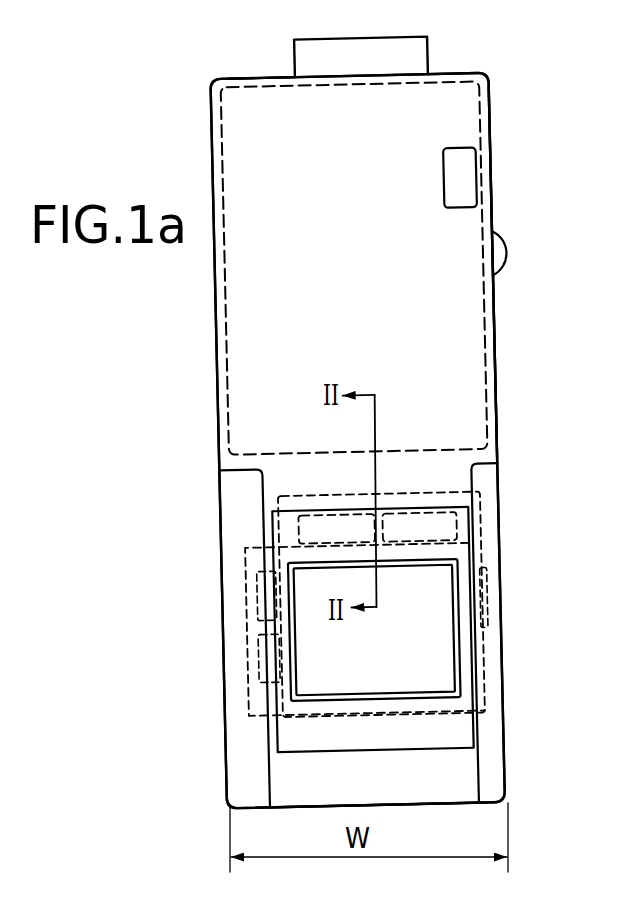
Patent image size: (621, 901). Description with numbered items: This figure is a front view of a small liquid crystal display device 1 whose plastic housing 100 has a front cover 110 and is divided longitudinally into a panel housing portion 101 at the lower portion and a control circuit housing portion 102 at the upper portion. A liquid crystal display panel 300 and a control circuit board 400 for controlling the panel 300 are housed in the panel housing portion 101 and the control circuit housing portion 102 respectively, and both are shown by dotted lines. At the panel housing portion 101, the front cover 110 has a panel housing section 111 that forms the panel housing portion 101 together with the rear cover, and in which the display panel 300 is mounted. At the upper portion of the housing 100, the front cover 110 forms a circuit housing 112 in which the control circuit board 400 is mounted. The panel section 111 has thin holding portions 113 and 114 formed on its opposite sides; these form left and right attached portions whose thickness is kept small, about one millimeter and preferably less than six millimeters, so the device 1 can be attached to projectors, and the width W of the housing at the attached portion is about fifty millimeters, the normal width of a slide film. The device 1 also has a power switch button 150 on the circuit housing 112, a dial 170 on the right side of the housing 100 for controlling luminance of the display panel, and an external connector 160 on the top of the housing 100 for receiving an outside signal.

The small liquid crystal display device 1 is at (208, 332).
The housing 100 is at (207, 107).
The panel housing portion 101 is at (517, 760).
The control circuit housing portion 102 is at (504, 350).
The front cover 110 is at (222, 462).
The panel housing section 111 is at (408, 785).
The circuit housing 112 is at (277, 107).
The thin holding portion 113 is at (247, 660).
The thin holding portion 114 is at (490, 662).
The power switch button 150 is at (463, 180).
The external connector 160 is at (418, 56).
The dial 170 is at (497, 255).
The liquid crystal display panel 300 is at (449, 490).
The control circuit board 400 is at (496, 419).